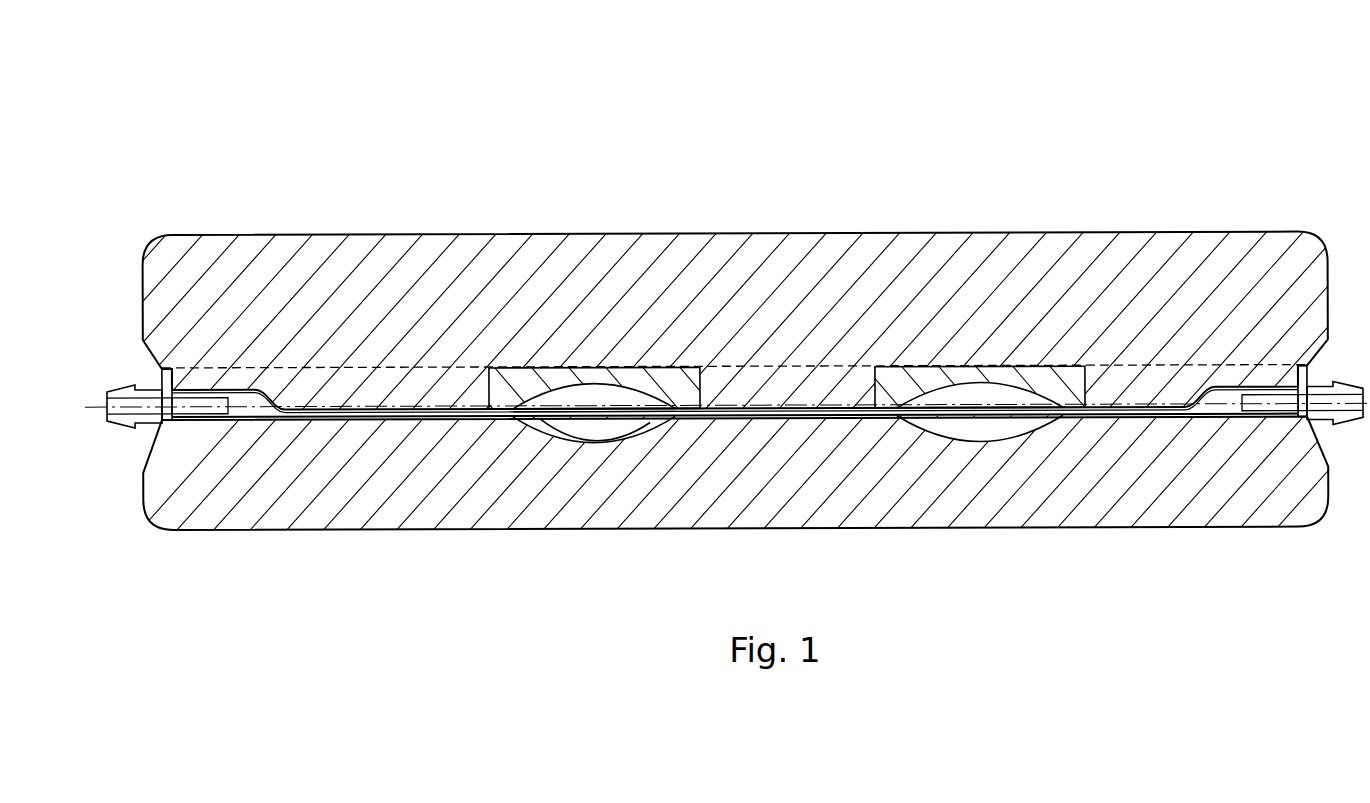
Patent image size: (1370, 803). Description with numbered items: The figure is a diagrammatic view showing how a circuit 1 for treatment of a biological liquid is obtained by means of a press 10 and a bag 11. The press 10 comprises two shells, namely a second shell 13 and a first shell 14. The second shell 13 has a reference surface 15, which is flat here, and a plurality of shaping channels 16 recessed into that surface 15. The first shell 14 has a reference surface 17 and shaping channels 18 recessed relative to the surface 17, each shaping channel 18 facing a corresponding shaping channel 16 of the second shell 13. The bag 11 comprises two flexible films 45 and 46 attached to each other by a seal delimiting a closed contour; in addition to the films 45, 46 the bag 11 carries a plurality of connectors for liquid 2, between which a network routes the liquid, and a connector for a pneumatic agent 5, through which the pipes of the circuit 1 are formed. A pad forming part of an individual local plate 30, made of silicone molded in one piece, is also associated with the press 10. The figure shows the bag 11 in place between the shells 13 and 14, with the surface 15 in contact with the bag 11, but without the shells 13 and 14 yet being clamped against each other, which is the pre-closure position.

The circuit 1 is at (856, 130).
The press 10 is at (1210, 231).
The first shell 14 is at (262, 330).
The second shell 13 is at (258, 500).
The connector for liquid 2 is at (116, 436).
The connector for a pneumatic agent 5 is at (1352, 432).
The reference surface 15 is at (236, 403).
The reference surface 17 is at (345, 422).
The shaping channel 18 is at (570, 424).
The flexible film 45 is at (651, 416).
The flexible film 46 is at (650, 442).
The shaping channel 16 is at (588, 428).
The local plate 30 is at (993, 380).
The bag 11 is at (983, 444).